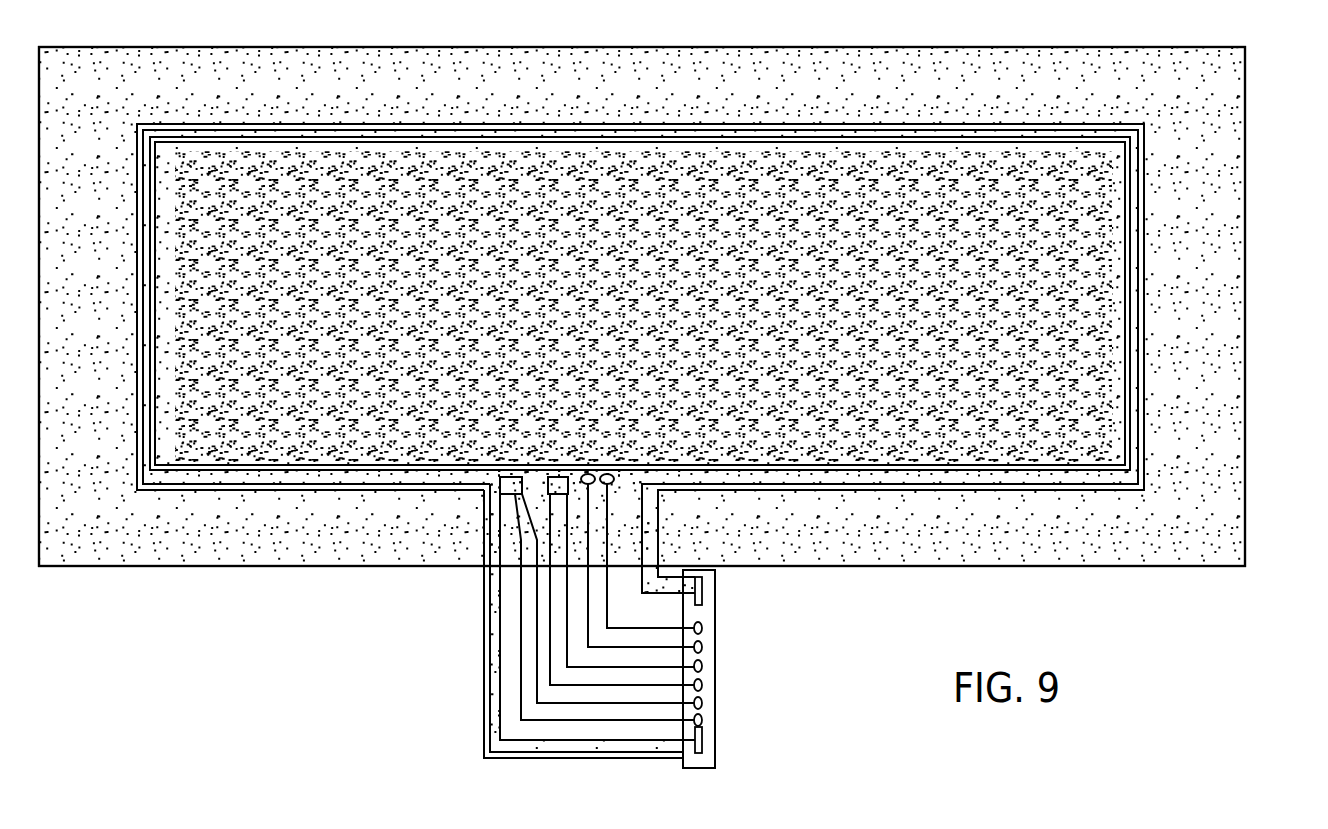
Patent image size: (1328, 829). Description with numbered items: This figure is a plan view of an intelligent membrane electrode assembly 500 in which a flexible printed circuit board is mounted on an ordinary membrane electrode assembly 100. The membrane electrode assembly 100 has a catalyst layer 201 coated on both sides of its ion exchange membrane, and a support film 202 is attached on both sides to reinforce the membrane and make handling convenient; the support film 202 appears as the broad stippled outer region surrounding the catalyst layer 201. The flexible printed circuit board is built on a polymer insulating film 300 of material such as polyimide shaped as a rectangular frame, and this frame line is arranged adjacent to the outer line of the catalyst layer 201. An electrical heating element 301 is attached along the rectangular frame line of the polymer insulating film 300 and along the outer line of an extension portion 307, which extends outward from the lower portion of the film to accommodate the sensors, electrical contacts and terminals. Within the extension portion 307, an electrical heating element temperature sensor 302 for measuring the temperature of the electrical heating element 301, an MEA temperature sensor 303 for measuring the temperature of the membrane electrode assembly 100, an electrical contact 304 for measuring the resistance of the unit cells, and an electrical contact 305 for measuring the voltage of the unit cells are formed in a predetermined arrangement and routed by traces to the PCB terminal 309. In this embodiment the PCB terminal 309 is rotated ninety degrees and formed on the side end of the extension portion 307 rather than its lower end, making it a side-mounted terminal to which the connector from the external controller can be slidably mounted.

The sensor assembly 500 is at (657, 28).
The membrane electrode assembly 100 is at (1246, 154).
The support film 202 is at (657, 104).
The catalyst layer 201 is at (657, 202).
The polymer insulating film 300 is at (1143, 218).
The electrical heating element 301 is at (1131, 260).
The electrical heating element temperature sensor 302 is at (510, 488).
The MEA temperature sensor 303 is at (552, 489).
The electrical contact for measuring resistance 304 is at (611, 484).
The electrical contact for measuring voltage 305 is at (591, 486).
The extension portion 307 is at (588, 758).
The PCB terminal 309 is at (715, 728).